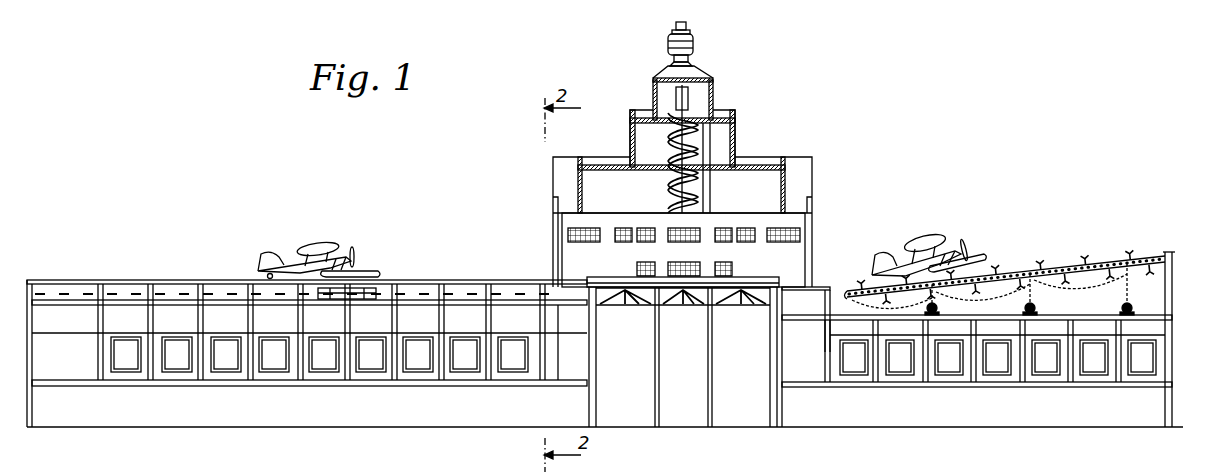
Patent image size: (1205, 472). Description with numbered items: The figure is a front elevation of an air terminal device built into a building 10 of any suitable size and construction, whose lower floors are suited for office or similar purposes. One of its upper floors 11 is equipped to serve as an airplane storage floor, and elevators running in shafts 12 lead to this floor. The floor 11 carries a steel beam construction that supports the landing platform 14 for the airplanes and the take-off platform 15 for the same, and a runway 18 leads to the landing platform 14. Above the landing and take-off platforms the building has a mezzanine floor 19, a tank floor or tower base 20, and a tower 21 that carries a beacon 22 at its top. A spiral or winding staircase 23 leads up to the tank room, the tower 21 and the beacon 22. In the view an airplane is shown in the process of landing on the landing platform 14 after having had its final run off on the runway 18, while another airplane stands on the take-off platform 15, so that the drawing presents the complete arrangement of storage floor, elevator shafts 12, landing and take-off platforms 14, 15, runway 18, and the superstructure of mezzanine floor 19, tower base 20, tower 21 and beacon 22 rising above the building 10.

The building 10 is at (1168, 408).
The upper floor 11 is at (1160, 375).
The elevator shafts 12 is at (683, 352).
The landing platform 14 is at (560, 290).
The take-off platform 15 is at (1140, 318).
The runway 18 is at (101, 281).
The mezzanine floor 19 is at (790, 252).
The tank floor or tower base 20 is at (778, 193).
The tower 21 is at (736, 141).
The beacon 22 is at (696, 47).
The spiral or winding staircase 23 is at (666, 181).